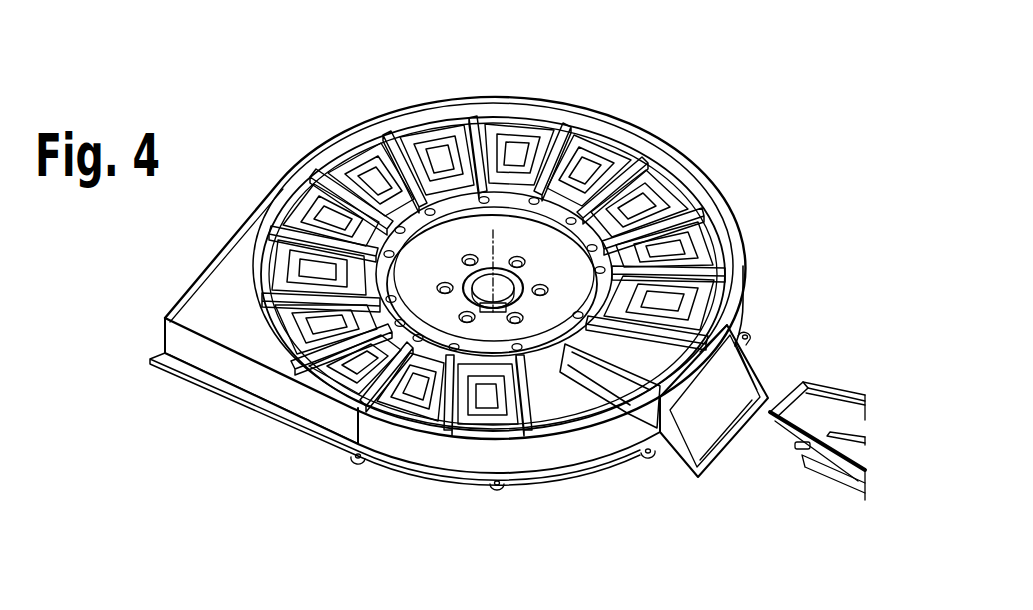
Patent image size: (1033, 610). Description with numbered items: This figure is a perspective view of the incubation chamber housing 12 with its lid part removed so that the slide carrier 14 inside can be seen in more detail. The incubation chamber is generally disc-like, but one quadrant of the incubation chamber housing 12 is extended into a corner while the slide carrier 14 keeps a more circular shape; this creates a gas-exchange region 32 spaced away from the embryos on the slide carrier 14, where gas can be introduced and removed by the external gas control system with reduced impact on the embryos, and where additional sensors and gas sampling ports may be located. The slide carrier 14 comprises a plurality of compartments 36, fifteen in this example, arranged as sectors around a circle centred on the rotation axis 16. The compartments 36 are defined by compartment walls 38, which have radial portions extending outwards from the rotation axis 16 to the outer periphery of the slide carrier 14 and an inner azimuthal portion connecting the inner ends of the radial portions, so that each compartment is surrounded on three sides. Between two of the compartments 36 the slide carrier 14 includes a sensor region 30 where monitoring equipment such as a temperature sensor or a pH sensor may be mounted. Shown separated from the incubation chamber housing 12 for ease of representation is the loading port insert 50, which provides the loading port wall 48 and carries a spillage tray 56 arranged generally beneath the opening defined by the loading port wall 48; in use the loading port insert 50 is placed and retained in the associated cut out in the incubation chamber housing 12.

The incubation chamber housing 12 is at (223, 247).
The slide carrier 14 is at (578, 154).
The rotation axis 16 is at (493, 238).
The sensor region 30 is at (620, 392).
The gas-exchange region 32 is at (240, 337).
The compartments 36 is at (510, 117).
The compartment walls 38 is at (705, 242).
The loading port wall 48 is at (815, 392).
The loading port insert 50 is at (840, 383).
The spillage tray 56 is at (832, 470).